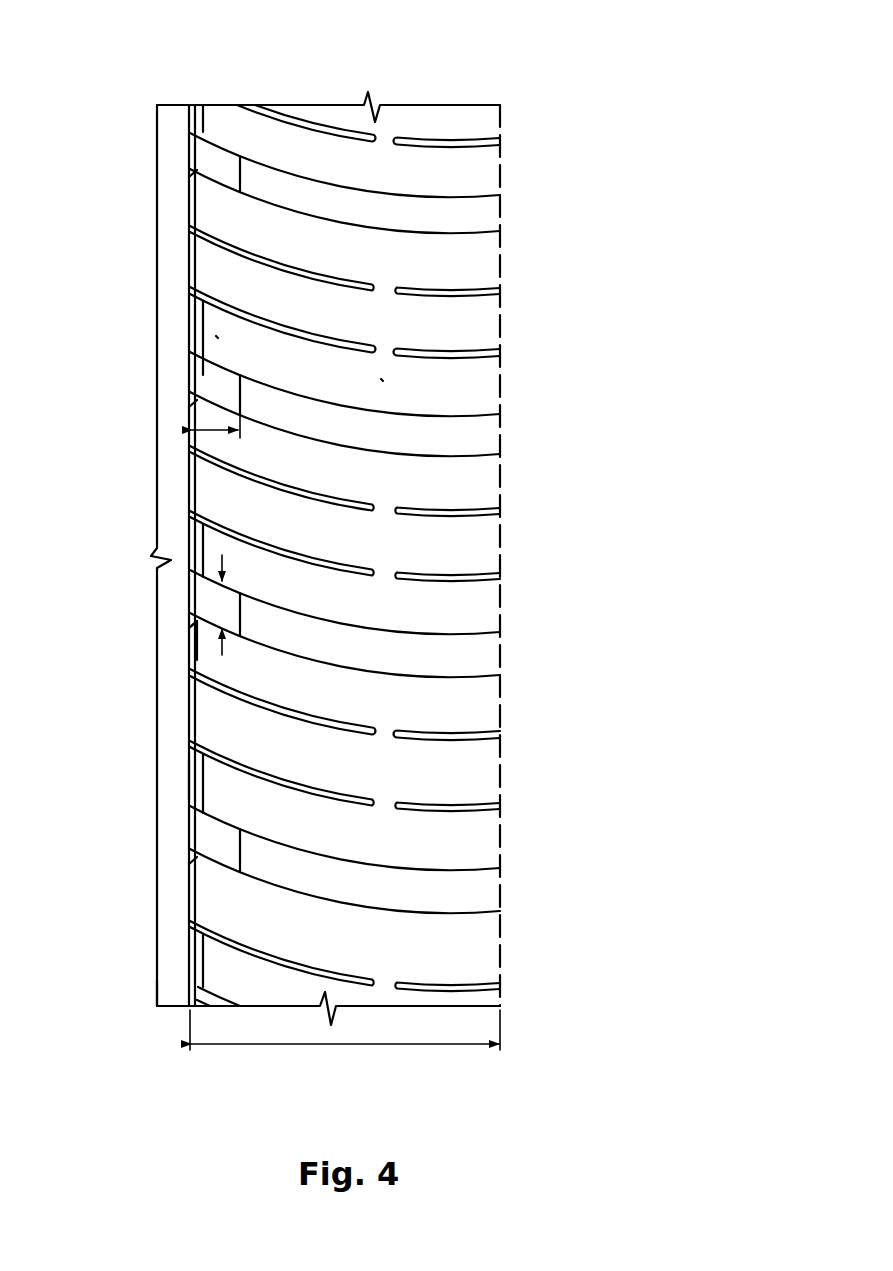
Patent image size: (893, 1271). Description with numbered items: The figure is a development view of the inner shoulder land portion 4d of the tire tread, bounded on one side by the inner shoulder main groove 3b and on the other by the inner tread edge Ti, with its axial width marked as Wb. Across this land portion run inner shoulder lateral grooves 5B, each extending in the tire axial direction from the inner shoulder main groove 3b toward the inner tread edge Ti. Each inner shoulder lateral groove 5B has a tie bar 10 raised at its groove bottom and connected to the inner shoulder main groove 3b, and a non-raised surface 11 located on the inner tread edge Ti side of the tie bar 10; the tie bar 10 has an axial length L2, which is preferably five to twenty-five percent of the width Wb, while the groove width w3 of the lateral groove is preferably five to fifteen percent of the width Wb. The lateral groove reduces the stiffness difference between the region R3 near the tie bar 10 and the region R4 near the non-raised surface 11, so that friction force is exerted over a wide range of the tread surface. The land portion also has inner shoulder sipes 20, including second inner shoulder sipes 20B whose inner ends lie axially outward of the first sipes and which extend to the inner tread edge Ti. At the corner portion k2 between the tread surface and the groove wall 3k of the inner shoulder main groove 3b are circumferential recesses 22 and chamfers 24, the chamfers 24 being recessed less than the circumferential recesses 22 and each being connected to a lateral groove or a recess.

The inner shoulder main groove 3b is at (171, 126).
The inner shoulder land portion 4d is at (318, 156).
The inner tread edge Ti is at (500, 118).
The inner shoulder sipes 20 is at (273, 268).
The second inner shoulder sipe 20B is at (447, 297).
The region near the tie bar R3 is at (216, 336).
The tie bar 10 is at (206, 367).
The inner shoulder lateral groove 5B is at (219, 383).
The region near the non-raised surface R4 is at (381, 379).
The non-raised surface 11 is at (403, 430).
The length of the tie bar in the tire axial direction L2 is at (200, 432).
The circumferential recess 22 is at (197, 537).
The groove width of the inner shoulder lateral groove w3 is at (222, 598).
The chamfer 24 is at (196, 654).
The corner portion k2 is at (184, 784).
The groove wall of the inner shoulder main groove 3k is at (186, 948).
The width of the inner shoulder land portion in the tire axial direction Wb is at (345, 1042).